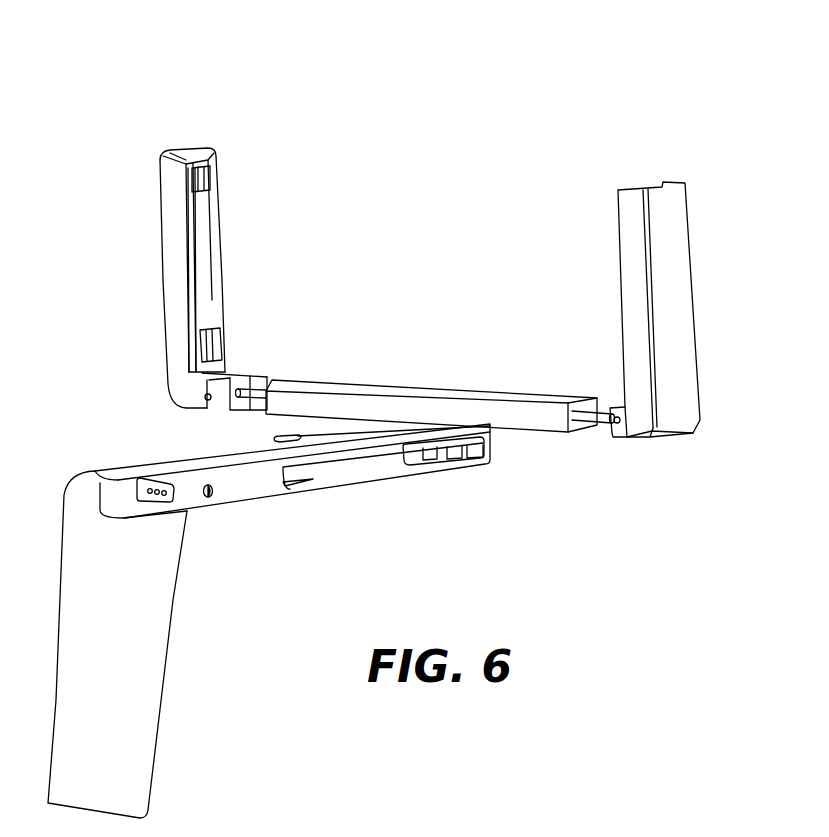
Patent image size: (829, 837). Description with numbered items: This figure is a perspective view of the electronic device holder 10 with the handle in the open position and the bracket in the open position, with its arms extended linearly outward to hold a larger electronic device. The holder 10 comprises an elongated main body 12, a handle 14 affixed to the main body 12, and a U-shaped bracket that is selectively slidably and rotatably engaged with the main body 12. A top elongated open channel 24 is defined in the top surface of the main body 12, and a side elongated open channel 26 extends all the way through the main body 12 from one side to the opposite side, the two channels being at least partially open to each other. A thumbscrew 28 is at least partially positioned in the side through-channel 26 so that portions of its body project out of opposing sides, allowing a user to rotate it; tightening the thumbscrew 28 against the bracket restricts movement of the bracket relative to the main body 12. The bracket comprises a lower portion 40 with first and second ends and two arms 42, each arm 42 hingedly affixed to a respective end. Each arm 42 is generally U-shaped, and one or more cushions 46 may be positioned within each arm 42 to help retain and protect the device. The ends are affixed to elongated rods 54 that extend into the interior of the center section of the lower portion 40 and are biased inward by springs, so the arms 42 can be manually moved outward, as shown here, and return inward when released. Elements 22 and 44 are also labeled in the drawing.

The electronic device holder 10 is at (57, 116).
The main body 12 is at (225, 496).
The handle 14 is at (118, 741).
The port 22 is at (155, 482).
The top channel 24 is at (275, 440).
The side through-channel 26 is at (385, 472).
The thumbscrew 28 is at (469, 459).
The lower portion 40 is at (387, 397).
The arms 42 is at (172, 226).
The channel 44 is at (197, 273).
The cushions 46 is at (212, 178).
The elongated rods 54 is at (262, 381).